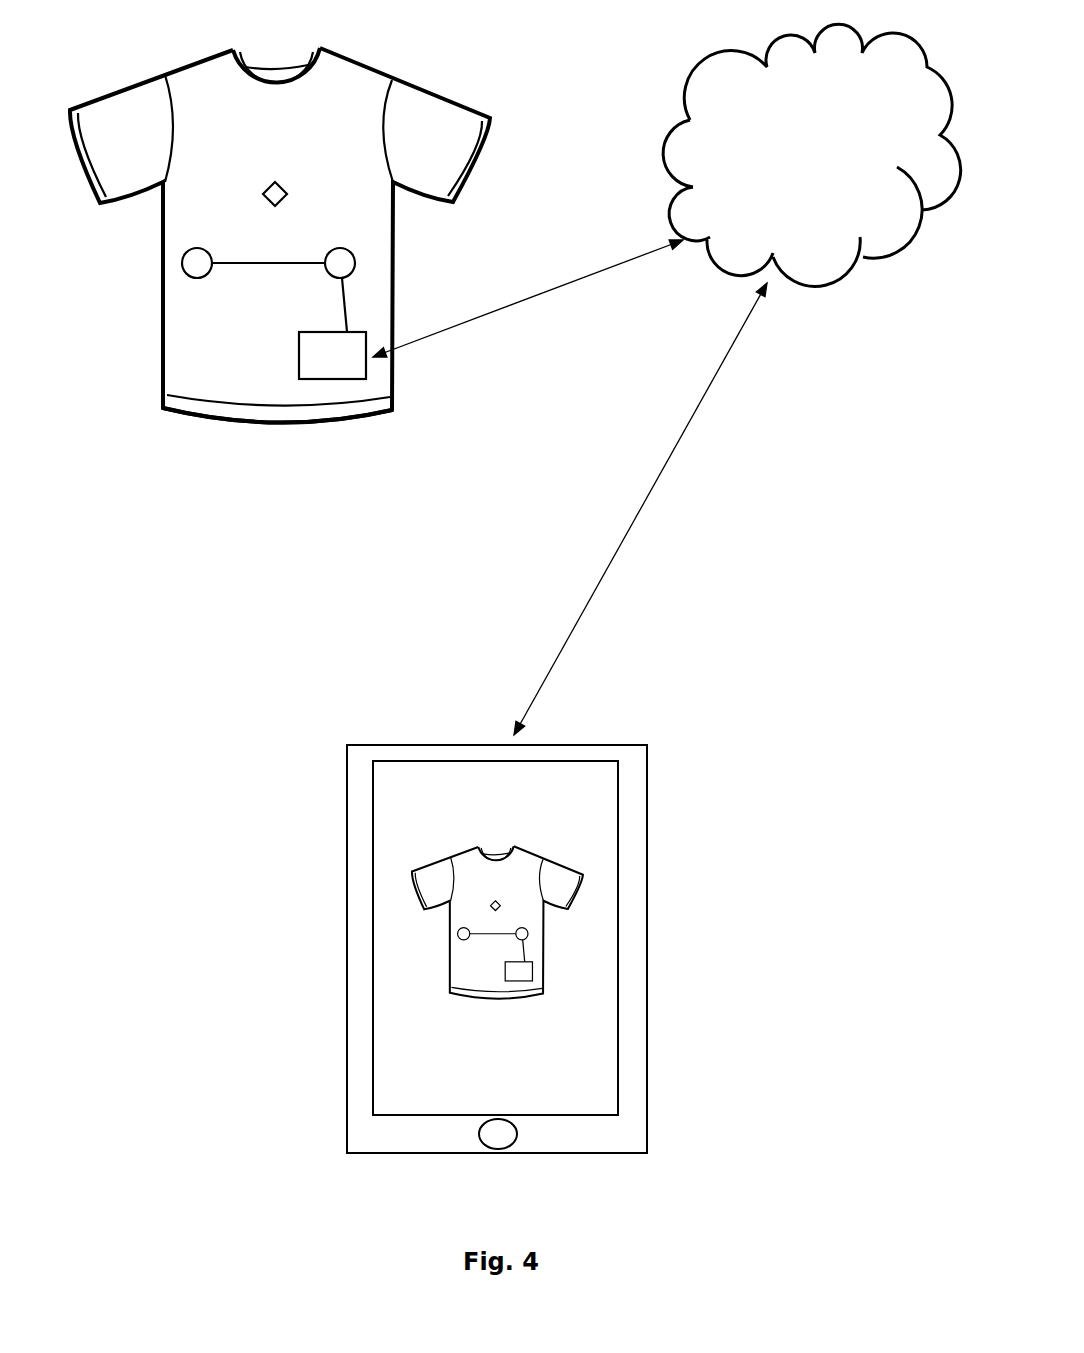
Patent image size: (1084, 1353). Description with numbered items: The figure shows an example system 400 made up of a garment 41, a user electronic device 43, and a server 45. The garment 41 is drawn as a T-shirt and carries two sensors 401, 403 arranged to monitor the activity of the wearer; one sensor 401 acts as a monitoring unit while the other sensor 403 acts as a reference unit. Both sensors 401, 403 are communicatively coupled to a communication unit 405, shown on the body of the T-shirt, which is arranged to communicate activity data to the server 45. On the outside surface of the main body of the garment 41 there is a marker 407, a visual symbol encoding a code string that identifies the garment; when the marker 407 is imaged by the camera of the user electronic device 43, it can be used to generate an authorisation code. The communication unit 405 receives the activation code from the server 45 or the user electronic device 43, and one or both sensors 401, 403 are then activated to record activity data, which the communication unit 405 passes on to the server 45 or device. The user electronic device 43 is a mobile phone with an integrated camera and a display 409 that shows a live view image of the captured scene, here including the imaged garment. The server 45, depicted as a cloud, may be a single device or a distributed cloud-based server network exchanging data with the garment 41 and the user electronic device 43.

The system 400 is at (248, 707).
The garment 41 is at (190, 425).
The user electronic device 43 is at (342, 928).
The server 45 is at (813, 293).
The sensor 401 is at (184, 261).
The sensor 403 is at (347, 263).
The communication unit 405 is at (365, 370).
The marker 407 is at (284, 187).
The display 409 is at (593, 811).